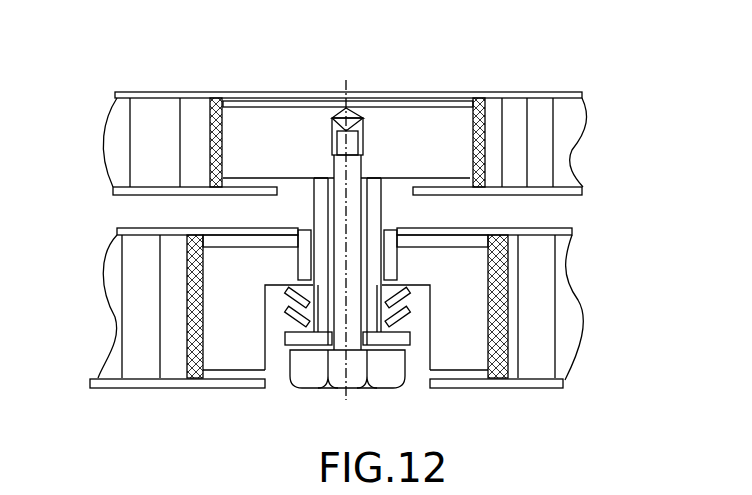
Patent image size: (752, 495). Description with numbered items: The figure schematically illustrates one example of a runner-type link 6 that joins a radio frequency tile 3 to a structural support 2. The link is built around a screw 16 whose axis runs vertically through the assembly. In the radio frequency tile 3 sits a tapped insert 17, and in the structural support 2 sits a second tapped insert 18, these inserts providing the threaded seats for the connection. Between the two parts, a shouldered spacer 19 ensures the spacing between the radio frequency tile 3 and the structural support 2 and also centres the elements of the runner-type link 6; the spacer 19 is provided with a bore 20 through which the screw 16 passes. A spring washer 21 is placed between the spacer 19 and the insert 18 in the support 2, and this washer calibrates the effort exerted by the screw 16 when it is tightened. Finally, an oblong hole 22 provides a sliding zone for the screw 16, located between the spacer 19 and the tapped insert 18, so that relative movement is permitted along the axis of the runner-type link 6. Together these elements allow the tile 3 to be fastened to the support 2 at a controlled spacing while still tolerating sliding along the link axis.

The structural support 2 is at (545, 343).
The radio frequency tile 3 is at (567, 123).
The runner-type link 6 is at (602, 95).
The screw 16 is at (353, 292).
The tapped insert 17 is at (423, 142).
The tapped insert 18 is at (245, 352).
The shouldered spacer 19 is at (323, 213).
The bore 20 is at (352, 138).
The spring washer 21 is at (405, 303).
The oblong hole 22 is at (302, 229).